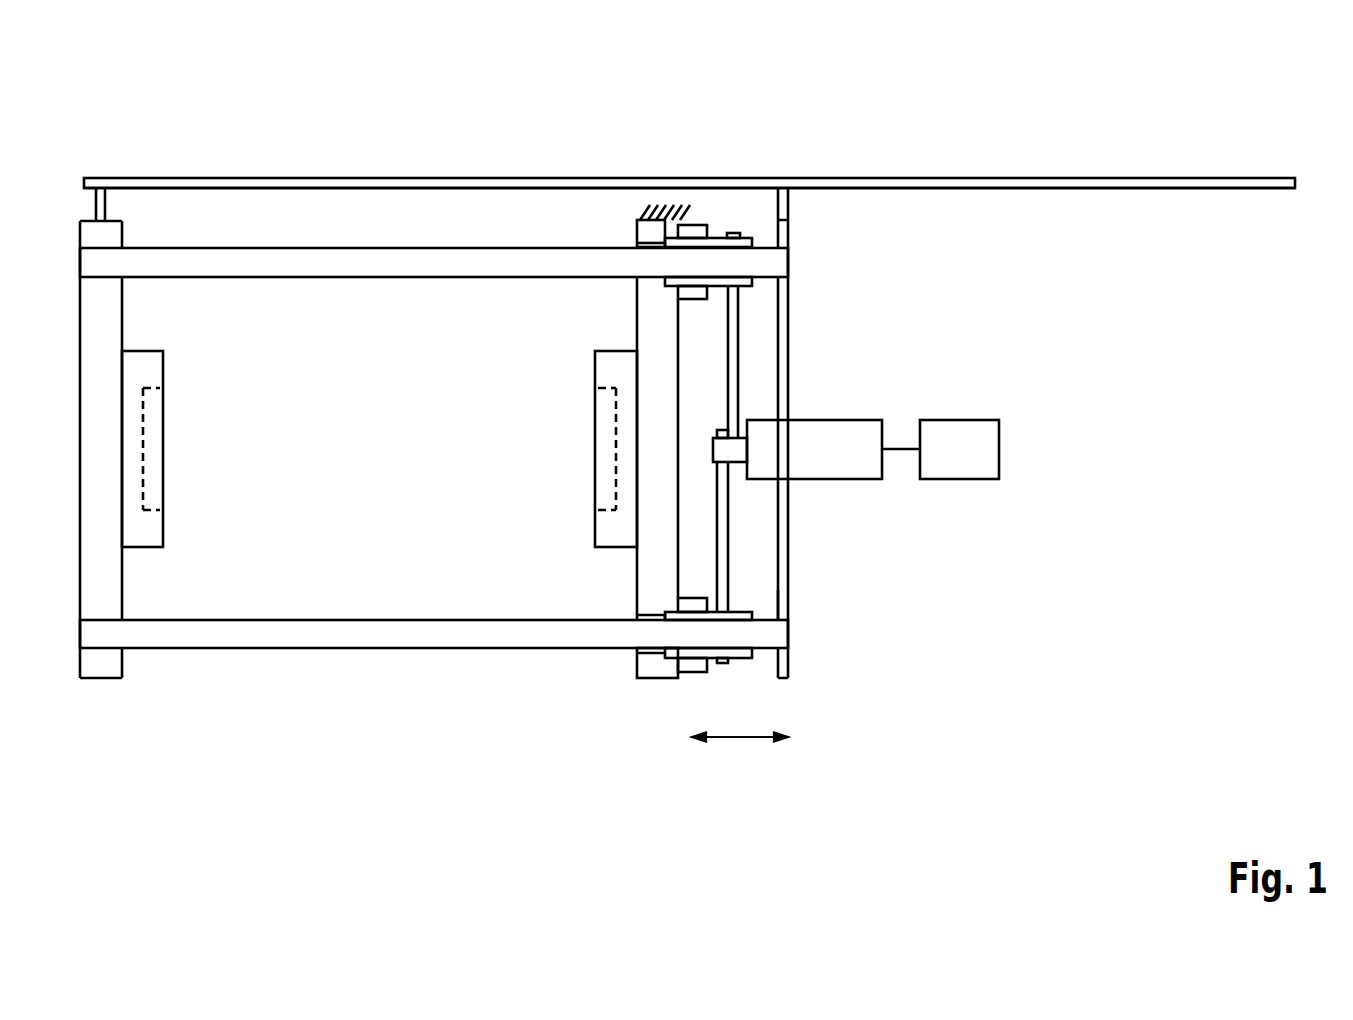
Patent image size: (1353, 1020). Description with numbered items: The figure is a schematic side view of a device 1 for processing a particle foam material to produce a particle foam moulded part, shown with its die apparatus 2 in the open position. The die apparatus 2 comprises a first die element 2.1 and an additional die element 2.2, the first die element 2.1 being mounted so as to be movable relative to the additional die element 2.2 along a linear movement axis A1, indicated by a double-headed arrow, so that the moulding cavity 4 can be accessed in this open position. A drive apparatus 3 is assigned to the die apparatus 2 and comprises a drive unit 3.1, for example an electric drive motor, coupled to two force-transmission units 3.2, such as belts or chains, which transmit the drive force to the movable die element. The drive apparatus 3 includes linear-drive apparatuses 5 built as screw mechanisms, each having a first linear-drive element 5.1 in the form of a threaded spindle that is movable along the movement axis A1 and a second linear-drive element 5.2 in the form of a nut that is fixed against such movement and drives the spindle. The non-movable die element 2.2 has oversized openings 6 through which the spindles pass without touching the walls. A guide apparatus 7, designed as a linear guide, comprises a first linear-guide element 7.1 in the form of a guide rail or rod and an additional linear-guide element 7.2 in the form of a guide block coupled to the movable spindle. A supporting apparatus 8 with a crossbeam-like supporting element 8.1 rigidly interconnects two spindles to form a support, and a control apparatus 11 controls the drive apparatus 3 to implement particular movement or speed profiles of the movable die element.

The device 1 is at (1155, 98).
The die apparatus 2 is at (377, 672).
The first die element 2.1 is at (157, 558).
The additional die element 2.2 is at (602, 558).
The drive apparatus 3 is at (804, 449).
The drive unit 3.1 is at (855, 433).
The force-transmission unit 3.2 is at (745, 350).
The moulding cavity 4 is at (143, 455).
The linear-drive apparatus 5 is at (712, 380).
The first linear-drive element 5.1 is at (550, 260).
The second linear-drive element 5.2 is at (717, 247).
The opening 6 is at (648, 242).
The guide apparatus 7 is at (957, 170).
The first linear-guide element 7.1 is at (920, 185).
The additional linear-guide element 7.2 is at (785, 202).
The supporting apparatus 8 is at (834, 463).
The supporting element 8.1 is at (783, 607).
The control apparatus 11 is at (963, 433).
The movement axis A1 is at (742, 737).